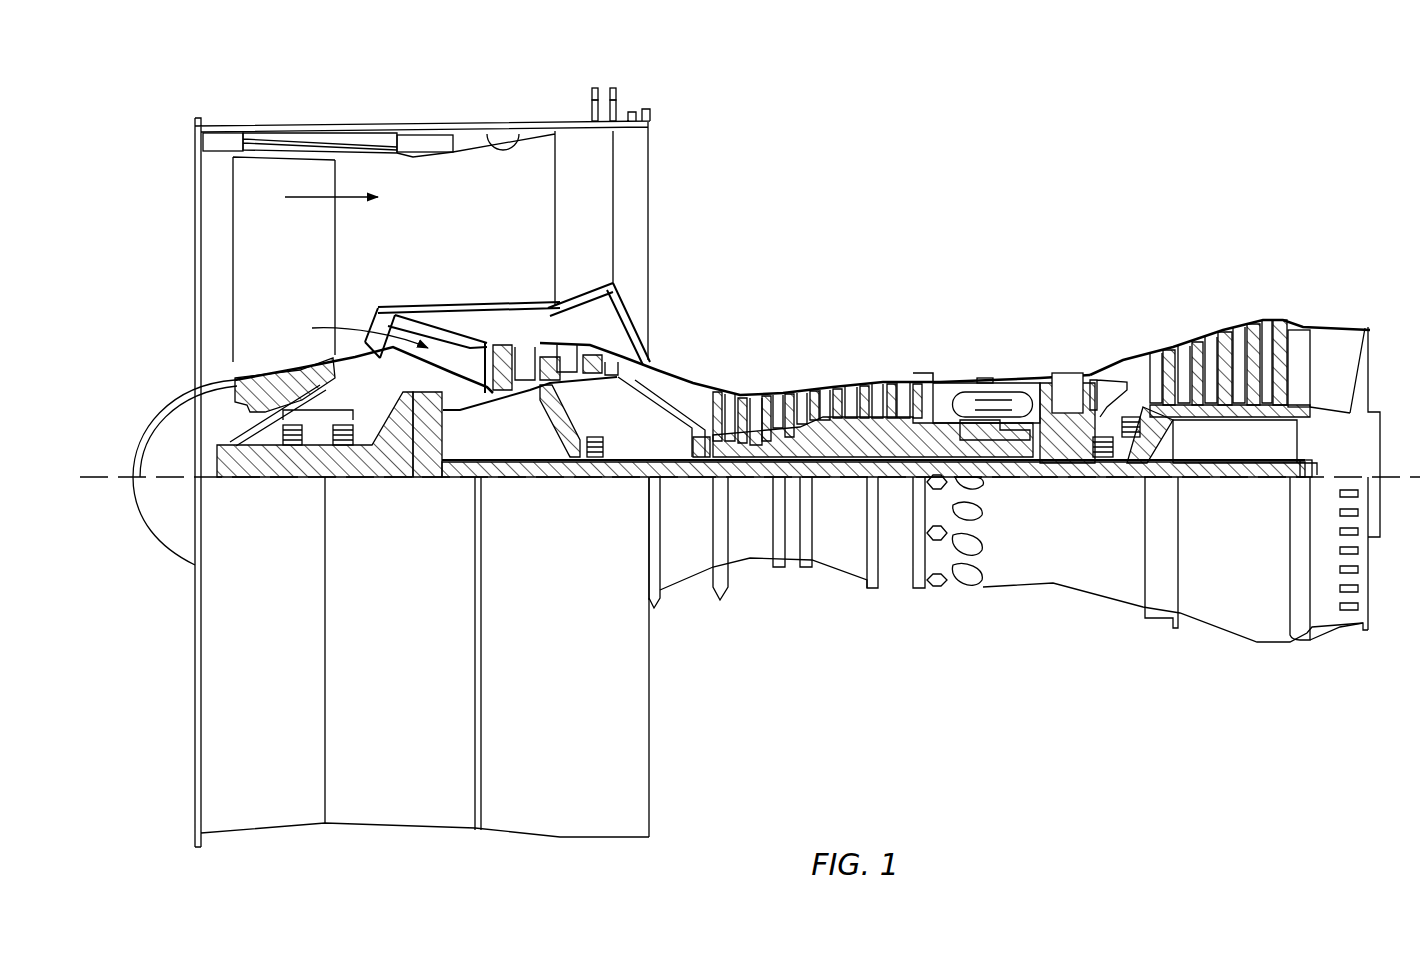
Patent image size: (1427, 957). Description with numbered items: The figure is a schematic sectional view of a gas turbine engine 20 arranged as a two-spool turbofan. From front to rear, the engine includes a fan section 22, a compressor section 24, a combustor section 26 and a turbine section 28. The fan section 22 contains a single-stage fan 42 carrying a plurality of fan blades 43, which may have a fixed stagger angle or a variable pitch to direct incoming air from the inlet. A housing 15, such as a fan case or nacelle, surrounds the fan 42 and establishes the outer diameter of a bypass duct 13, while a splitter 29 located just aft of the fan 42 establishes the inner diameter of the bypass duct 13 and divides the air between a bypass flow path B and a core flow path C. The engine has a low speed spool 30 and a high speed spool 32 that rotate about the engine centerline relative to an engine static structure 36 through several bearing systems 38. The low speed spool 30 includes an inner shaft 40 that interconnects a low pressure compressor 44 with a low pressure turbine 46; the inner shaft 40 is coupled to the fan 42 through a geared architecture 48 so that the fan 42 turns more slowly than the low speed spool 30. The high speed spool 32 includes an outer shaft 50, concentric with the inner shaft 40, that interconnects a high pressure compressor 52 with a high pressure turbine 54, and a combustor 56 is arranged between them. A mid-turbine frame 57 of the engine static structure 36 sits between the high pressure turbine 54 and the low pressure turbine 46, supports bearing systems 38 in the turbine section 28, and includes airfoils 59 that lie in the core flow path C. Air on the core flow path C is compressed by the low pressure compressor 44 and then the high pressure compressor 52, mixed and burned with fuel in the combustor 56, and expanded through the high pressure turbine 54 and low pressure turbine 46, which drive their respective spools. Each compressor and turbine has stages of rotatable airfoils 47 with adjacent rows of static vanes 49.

The gas turbine engine 20 is at (1046, 216).
The fan section 22 is at (344, 116).
The housing 15 is at (430, 134).
The bypass duct 13 is at (508, 150).
The fan 42 is at (292, 262).
The fan blades 43 is at (326, 270).
The geared architecture 48 is at (430, 455).
The bearing systems 38 is at (600, 452).
The splitter 29 is at (396, 302).
The rotatable airfoils 47 is at (500, 350).
The static vanes 49 is at (520, 350).
The low pressure compressor 44 is at (588, 347).
The compressor section 24 is at (707, 370).
The high pressure compressor 52 is at (818, 388).
The high speed spool 32 is at (900, 418).
The low speed spool 30 is at (850, 480).
The engine static structure 36 is at (895, 590).
The inner shaft 40 is at (674, 480).
The outer shaft 50 is at (1010, 455).
The combustor section 26 is at (978, 364).
The combustor 56 is at (993, 398).
The high pressure turbine 54 is at (1050, 380).
The mid-turbine frame 57 is at (1125, 392).
The turbine section 28 is at (1173, 308).
The low pressure turbine 46 is at (1222, 338).
The airfoils 59 is at (1163, 426).
The bypass flow path B is at (320, 198).
The core flow path C is at (360, 332).